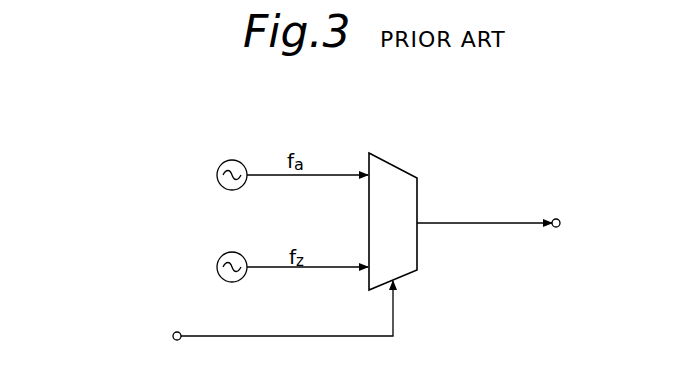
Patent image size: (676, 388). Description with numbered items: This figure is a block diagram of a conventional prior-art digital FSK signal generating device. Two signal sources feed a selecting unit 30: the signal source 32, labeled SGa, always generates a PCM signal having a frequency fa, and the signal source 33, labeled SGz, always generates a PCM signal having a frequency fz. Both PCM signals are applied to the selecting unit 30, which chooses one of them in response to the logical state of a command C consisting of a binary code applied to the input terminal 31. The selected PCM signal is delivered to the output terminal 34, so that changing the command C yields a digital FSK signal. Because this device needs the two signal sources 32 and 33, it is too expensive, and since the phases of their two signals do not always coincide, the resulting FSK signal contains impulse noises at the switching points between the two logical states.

The selecting unit 30 is at (394, 165).
The input terminal 31 is at (177, 332).
The signal source 32 is at (231, 160).
The signal source 33 is at (231, 252).
The output terminal 34 is at (556, 228).